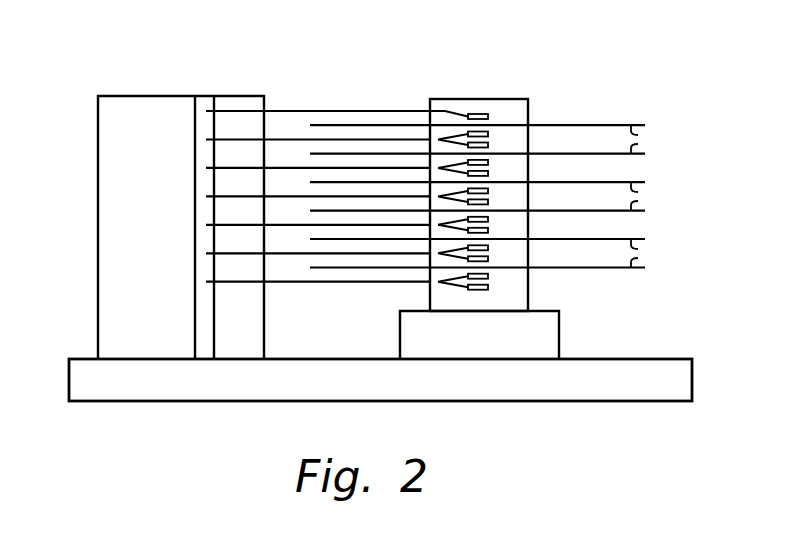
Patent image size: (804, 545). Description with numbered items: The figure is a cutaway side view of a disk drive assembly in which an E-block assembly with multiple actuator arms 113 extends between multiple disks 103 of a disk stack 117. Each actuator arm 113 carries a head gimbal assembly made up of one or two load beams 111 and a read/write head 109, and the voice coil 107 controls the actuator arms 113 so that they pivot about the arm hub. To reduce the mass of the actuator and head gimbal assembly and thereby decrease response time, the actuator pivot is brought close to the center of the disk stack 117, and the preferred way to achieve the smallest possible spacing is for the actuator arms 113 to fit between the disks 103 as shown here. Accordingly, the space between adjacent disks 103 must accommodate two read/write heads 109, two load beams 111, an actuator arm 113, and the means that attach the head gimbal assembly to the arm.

The disks 103 is at (645, 136).
The voice coil 107 is at (167, 96).
The read/write head 109 is at (490, 147).
The load beams 111 is at (442, 122).
The actuator arms 113 is at (298, 138).
The disk stack 117 is at (528, 103).